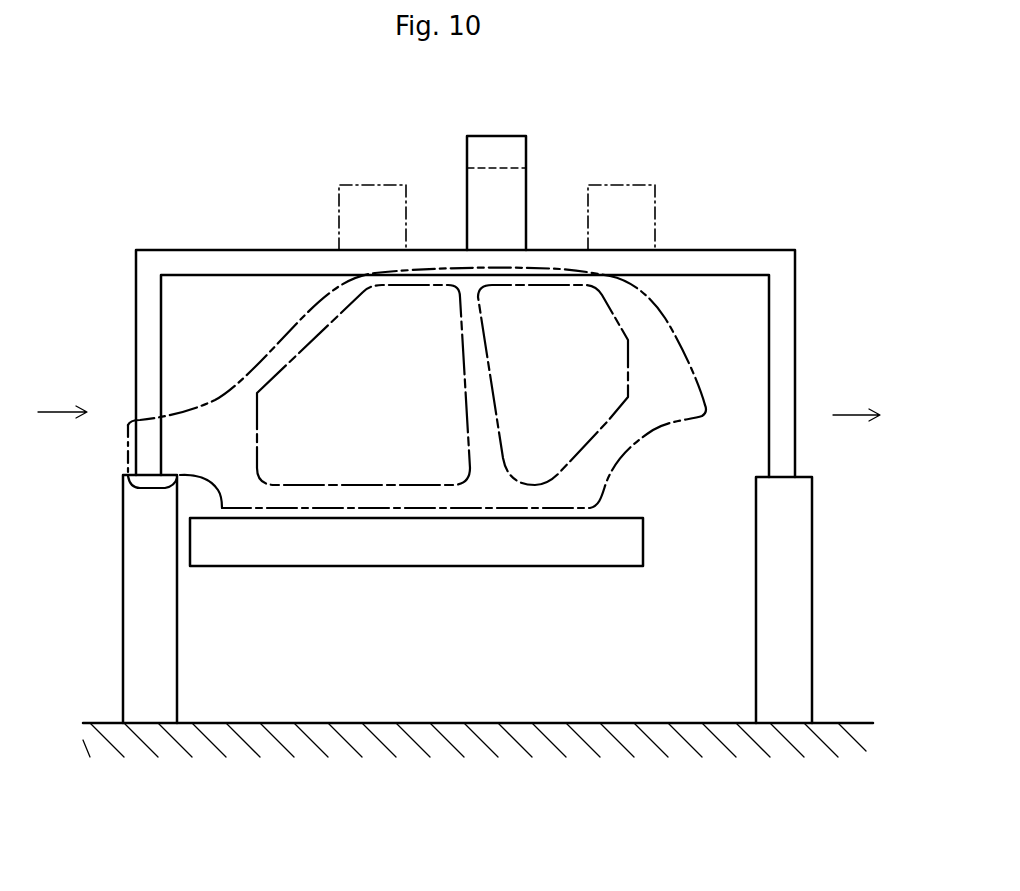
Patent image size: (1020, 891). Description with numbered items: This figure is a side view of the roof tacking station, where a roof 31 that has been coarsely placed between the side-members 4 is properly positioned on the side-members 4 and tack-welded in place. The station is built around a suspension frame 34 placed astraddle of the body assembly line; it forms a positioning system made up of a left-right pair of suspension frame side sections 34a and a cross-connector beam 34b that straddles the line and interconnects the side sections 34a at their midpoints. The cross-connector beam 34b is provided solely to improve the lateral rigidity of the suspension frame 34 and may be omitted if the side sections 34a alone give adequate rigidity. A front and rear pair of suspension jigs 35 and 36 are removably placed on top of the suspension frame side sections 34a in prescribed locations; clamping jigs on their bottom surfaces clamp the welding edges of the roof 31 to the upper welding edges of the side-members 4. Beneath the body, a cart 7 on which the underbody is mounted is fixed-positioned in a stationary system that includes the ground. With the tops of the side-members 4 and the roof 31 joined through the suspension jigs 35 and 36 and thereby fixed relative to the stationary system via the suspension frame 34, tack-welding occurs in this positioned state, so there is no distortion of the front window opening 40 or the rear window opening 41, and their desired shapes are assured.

The side-member 4 is at (444, 337).
The cart 7 is at (420, 566).
The roof 31 is at (442, 268).
The suspension frame 34 is at (832, 586).
The suspension frame side section 34a is at (795, 452).
The cross-connector beam 34b is at (526, 150).
The suspension jig 35 is at (655, 208).
The suspension jig 36 is at (340, 217).
The front window opening 40 is at (277, 345).
The rear window opening 41 is at (660, 325).